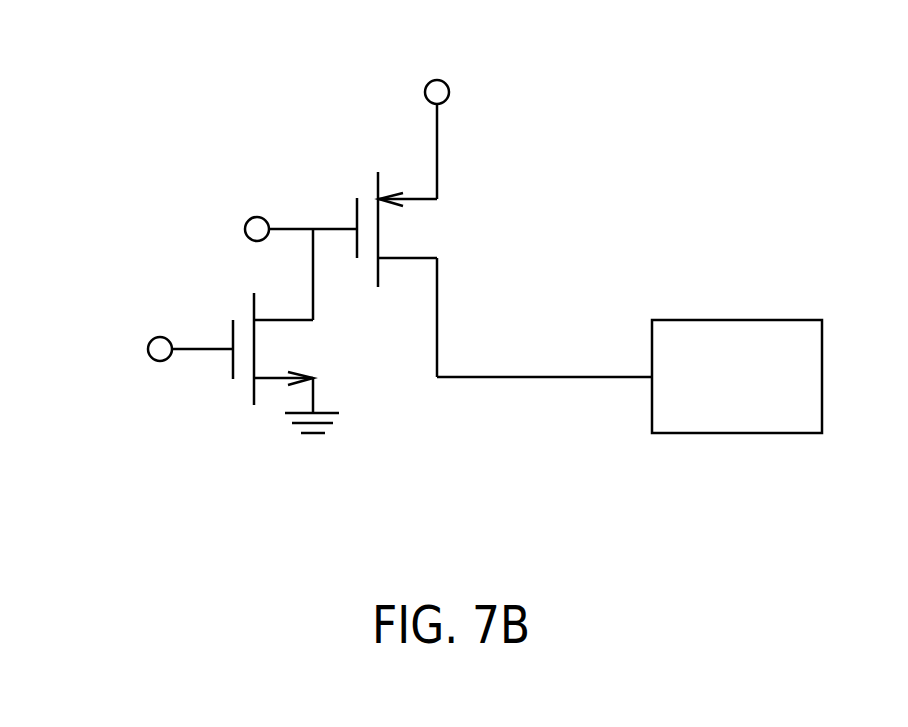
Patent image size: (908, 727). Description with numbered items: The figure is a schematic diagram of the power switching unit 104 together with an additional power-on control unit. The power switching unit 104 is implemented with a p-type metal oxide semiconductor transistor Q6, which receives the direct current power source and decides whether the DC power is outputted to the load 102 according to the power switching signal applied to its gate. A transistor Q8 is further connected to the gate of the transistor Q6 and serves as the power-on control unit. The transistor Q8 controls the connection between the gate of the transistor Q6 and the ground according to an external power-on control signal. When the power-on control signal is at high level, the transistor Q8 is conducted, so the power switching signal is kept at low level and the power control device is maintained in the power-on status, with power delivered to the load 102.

The power switching unit 104 is at (765, 76).
The load 102 is at (792, 320).
The transistor Q6 is at (411, 229).
The transistor Q8 is at (287, 349).